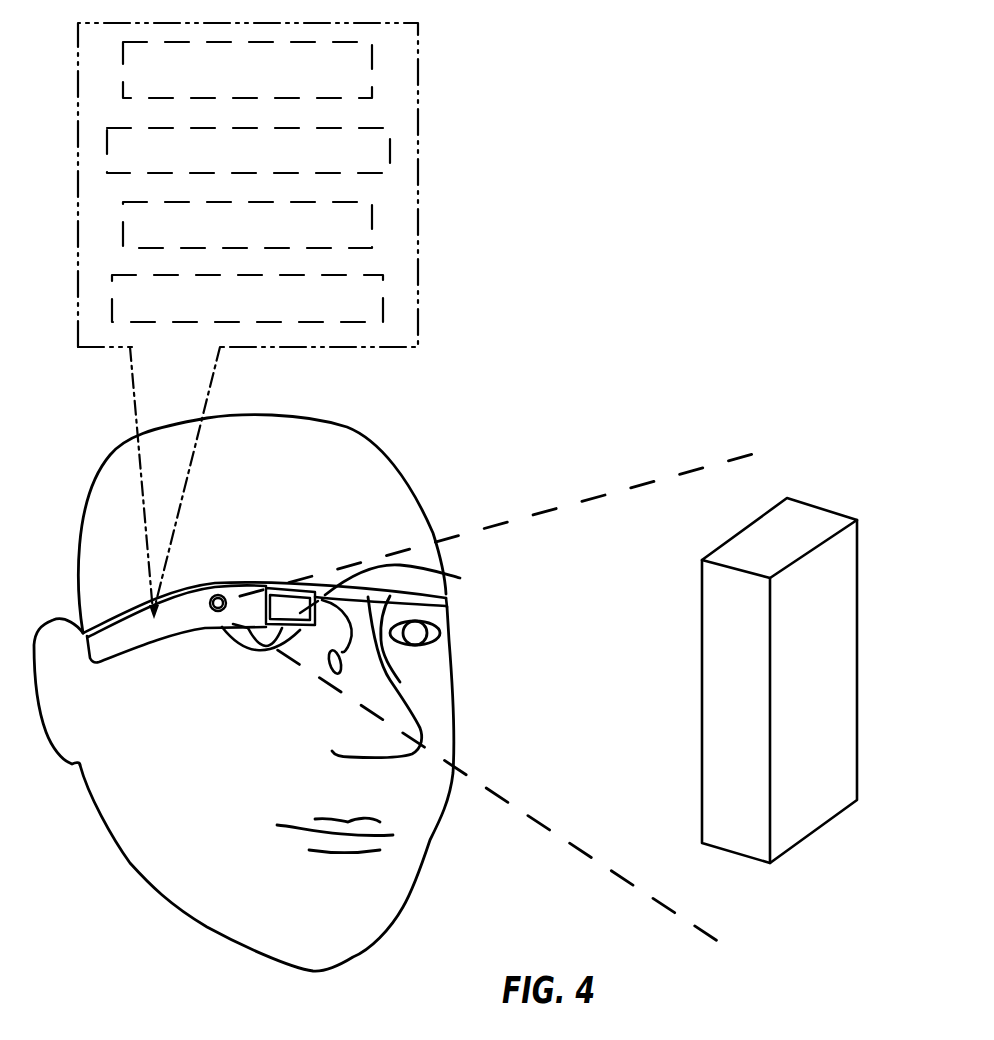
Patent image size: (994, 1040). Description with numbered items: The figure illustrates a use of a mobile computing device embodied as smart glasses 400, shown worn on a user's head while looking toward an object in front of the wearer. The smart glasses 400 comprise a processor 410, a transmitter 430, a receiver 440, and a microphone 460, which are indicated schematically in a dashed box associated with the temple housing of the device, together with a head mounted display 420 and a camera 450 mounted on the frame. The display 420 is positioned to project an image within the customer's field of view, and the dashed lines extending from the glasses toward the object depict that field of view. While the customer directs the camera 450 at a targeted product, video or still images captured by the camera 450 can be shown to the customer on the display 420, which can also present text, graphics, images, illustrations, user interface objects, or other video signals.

The smart glasses 400 is at (322, 583).
The processor 410 is at (247, 70).
The head mounted display 420 is at (460, 578).
The transmitter 430 is at (248, 150).
The receiver 440 is at (247, 225).
The camera 450 is at (213, 609).
The microphone 460 is at (247, 298).